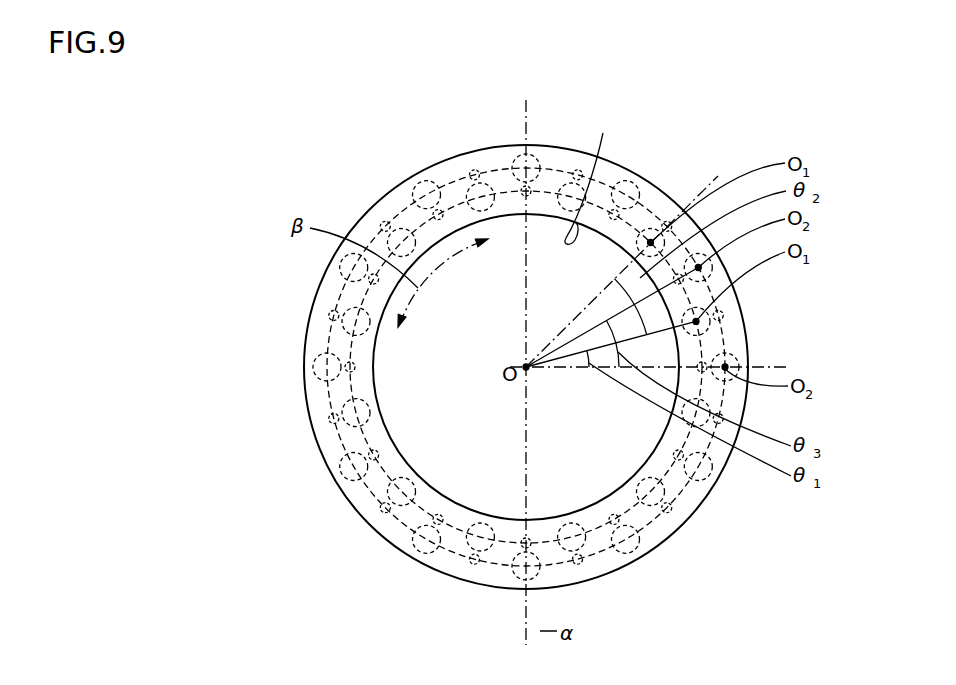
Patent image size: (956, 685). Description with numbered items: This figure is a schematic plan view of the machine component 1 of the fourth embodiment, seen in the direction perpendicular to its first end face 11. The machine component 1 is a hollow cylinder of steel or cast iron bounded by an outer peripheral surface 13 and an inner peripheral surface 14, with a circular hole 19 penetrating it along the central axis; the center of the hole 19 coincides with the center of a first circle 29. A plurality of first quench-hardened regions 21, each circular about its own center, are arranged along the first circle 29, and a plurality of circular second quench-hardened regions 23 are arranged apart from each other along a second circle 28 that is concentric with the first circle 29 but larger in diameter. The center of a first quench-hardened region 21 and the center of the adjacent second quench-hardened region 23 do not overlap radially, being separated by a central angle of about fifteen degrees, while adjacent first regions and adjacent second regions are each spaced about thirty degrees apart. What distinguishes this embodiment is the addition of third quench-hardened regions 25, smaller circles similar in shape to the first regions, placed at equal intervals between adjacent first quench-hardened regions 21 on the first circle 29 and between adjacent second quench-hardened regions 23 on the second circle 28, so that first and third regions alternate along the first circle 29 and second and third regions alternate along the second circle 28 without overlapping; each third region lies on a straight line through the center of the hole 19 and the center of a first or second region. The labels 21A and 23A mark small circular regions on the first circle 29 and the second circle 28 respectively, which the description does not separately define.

The machine component 1 is at (497, 340).
The first end face 11 is at (497, 342).
The outer peripheral surface 13 is at (308, 323).
The inner peripheral surface 14 is at (591, 175).
The hole 19 is at (462, 387).
The first quench-hardened region 21 is at (398, 208).
The first small hole 21A is at (706, 370).
The second quench-hardened region 23 is at (736, 360).
The second small hole 23A is at (721, 313).
The third quench-hardened region 25 is at (583, 562).
The second circle 28 is at (648, 523).
The first circle 29 is at (668, 470).